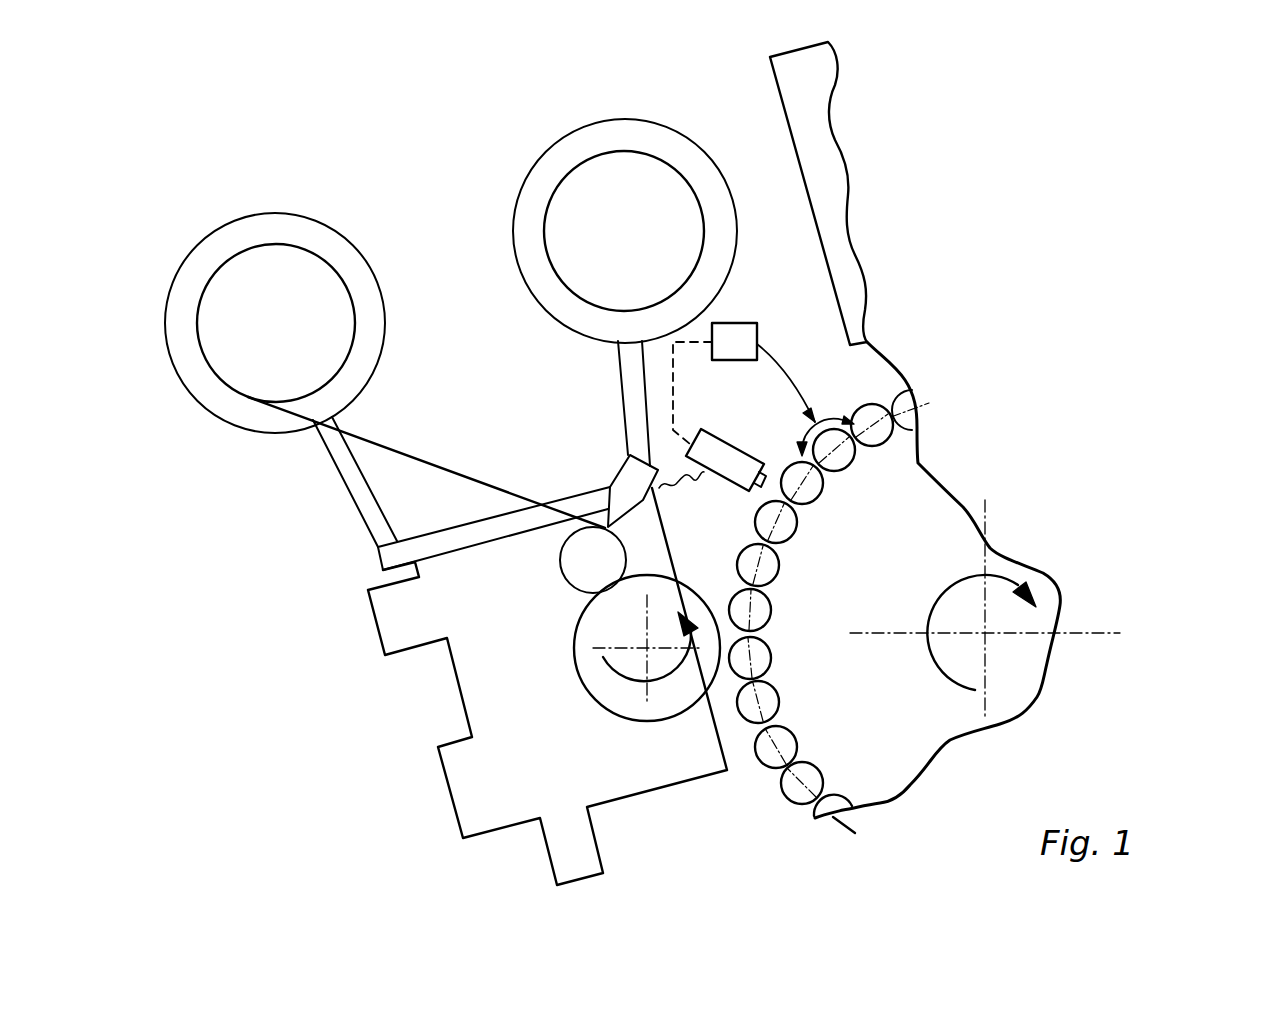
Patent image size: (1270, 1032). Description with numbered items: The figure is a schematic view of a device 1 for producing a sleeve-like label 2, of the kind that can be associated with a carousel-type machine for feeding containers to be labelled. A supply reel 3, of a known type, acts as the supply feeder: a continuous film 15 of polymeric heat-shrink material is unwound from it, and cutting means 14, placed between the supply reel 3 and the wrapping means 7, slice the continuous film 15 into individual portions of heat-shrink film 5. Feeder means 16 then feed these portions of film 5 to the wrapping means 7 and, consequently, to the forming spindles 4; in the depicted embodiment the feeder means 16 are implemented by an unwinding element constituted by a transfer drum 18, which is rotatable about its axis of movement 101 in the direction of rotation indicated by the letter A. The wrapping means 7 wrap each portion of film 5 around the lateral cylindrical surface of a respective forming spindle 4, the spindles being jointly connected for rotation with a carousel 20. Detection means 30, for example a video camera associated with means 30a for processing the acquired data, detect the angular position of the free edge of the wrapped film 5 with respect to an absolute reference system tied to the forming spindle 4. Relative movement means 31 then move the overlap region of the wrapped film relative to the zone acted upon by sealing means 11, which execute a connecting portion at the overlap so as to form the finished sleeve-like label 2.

The device for producing a sleeve-like label 1 is at (467, 247).
The sleeve-like label 2 is at (883, 390).
The supply reel 3 is at (298, 242).
The forming spindle 4 is at (883, 443).
The portion of heat-shrink film 5 is at (575, 668).
The wrapping means 7 is at (766, 768).
The sealing means 11 is at (840, 175).
The cutting means 14 is at (607, 473).
The continuous film 15 is at (440, 462).
The feeder means 16 is at (565, 660).
The transfer drum 18 is at (603, 682).
The carousel 20 is at (935, 530).
The detection means 30 is at (713, 464).
The data processing means 30a is at (748, 323).
The relative movement means 31 is at (830, 398).
The axis of movement 101 is at (647, 648).
The direction of rotation A is at (633, 690).